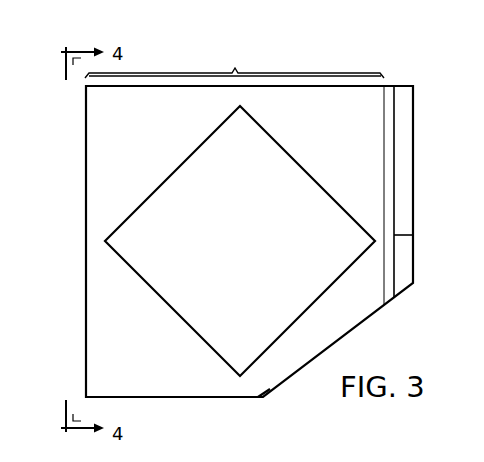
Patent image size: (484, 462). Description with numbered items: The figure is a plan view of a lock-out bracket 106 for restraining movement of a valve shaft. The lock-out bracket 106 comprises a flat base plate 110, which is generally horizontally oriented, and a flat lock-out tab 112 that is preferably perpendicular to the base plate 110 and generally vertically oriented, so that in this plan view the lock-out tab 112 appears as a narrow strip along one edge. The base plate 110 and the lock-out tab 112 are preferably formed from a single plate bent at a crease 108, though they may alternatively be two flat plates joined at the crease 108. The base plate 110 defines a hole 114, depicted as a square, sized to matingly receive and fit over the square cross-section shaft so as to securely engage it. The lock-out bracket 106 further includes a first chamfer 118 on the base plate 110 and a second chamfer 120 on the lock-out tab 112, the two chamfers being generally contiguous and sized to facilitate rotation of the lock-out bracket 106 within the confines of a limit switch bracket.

The lock-out bracket 106 is at (315, 62).
The crease 108 is at (388, 92).
The base plate 110 is at (234, 60).
The lock-out tab 112 is at (407, 160).
The hole 114 is at (184, 167).
The first chamfer 118 is at (276, 400).
The second chamfer 120 is at (406, 258).